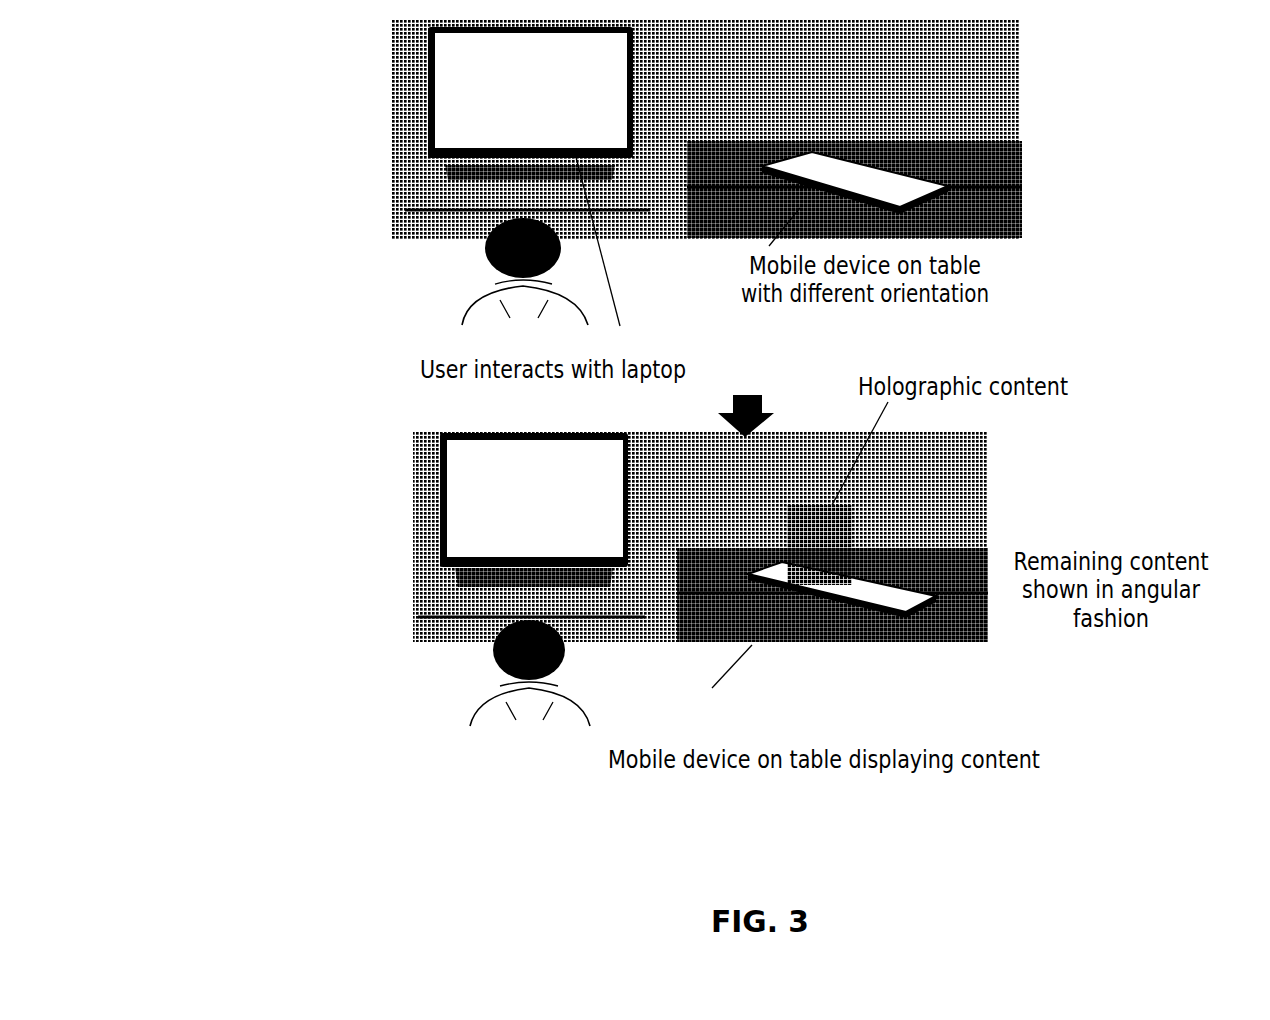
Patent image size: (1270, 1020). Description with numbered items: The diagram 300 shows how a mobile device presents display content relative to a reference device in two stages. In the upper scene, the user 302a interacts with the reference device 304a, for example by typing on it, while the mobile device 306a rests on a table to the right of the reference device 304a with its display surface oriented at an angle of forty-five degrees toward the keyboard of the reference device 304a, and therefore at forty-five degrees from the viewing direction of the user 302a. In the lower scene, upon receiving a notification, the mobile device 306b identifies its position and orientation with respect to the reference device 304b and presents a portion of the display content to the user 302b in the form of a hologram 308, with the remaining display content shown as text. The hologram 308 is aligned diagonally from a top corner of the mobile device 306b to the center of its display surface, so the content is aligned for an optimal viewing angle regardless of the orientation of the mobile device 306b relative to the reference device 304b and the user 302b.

The diagram 300 is at (225, 55).
The user 302a is at (472, 308).
The user 302b is at (483, 708).
The reference device 304a is at (428, 84).
The reference device 304b is at (440, 477).
The mobile device 306a is at (795, 158).
The mobile device 306b is at (886, 582).
The hologram 308 is at (800, 504).